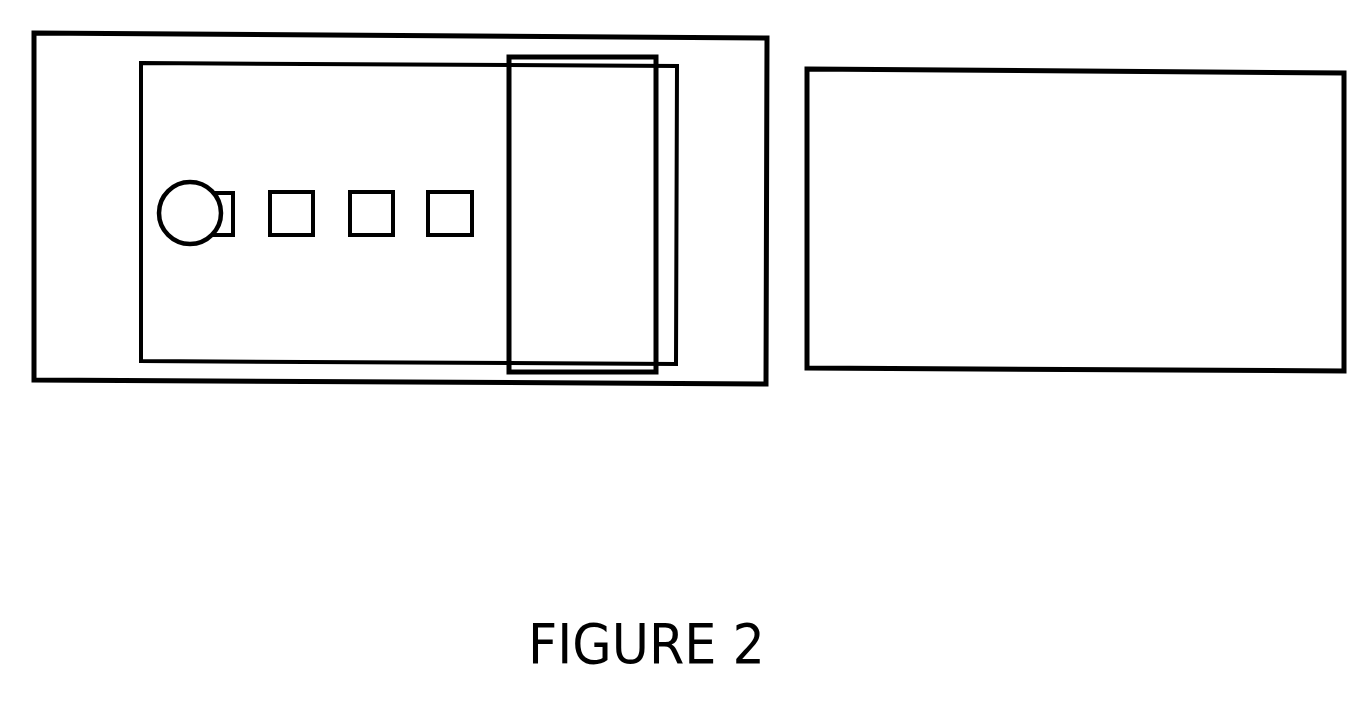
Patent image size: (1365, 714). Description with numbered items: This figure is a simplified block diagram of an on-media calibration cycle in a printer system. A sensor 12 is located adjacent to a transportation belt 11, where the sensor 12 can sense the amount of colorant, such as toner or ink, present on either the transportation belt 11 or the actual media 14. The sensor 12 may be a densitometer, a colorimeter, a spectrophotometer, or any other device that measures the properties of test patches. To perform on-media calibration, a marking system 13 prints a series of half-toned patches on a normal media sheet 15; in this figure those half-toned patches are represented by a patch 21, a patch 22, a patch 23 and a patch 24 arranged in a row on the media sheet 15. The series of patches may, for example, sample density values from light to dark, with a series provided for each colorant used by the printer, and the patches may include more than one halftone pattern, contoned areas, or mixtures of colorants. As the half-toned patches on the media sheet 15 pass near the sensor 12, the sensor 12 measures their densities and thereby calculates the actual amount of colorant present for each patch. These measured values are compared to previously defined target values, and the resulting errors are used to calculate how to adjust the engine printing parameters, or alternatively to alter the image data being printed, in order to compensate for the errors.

The transportation belt 11 is at (392, 387).
The sensor 12 is at (211, 222).
The marking system 13 is at (600, 246).
The actual media 14 is at (1069, 372).
The media sheet 15 is at (213, 341).
The patch 21 is at (218, 235).
The patch 22 is at (288, 235).
The patch 23 is at (367, 235).
The patch 24 is at (446, 235).